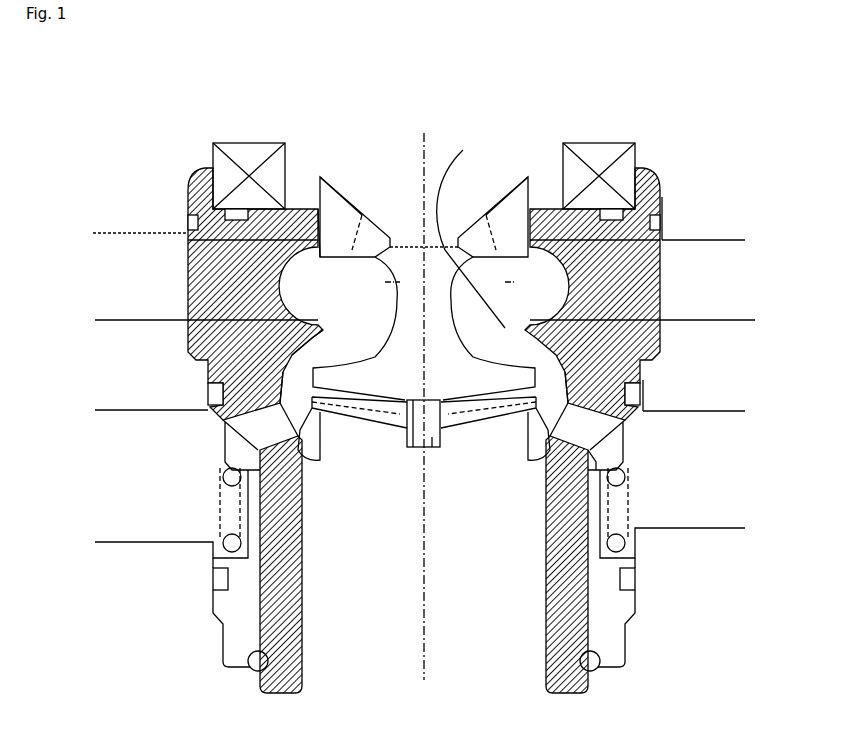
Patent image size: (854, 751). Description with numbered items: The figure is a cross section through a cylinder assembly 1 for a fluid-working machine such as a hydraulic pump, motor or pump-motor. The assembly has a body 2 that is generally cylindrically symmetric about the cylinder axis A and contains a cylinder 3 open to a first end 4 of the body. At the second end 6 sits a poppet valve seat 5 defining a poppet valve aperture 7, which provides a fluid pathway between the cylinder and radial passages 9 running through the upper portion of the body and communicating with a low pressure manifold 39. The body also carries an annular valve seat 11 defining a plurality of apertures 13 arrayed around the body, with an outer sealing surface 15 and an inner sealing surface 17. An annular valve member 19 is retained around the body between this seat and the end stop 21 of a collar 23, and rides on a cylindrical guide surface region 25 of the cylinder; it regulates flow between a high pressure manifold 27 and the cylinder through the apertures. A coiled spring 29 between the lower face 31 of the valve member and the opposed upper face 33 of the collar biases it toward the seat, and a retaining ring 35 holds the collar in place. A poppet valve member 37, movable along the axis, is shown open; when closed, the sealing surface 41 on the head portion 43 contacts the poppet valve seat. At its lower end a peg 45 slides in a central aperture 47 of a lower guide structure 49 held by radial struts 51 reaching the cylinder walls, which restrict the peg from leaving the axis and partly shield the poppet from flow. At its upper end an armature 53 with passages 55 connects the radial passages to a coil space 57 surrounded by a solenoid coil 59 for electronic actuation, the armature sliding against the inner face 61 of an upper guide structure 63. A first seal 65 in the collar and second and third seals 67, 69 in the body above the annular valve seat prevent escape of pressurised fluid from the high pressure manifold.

The cylinder assembly 1 is at (219, 83).
The body 2 is at (586, 689).
The cylinder 3 is at (190, 193).
The first end 4 is at (670, 707).
The poppet valve seat 5 is at (424, 387).
The second end 6 is at (659, 167).
The poppet valve aperture 7 is at (471, 233).
The radial passages 9 is at (183, 272).
The annular valve seat 11 is at (615, 445).
The apertures 13 is at (312, 458).
The outer sealing surface 15 is at (208, 408).
The inner sealing surface 17 is at (302, 495).
The annular valve member 19 is at (628, 440).
The end stop 21 is at (633, 527).
The collar 23 is at (233, 626).
The cylindrical guide surface region 25 is at (258, 470).
The high pressure manifold 27 is at (432, 433).
The coiled spring 29 is at (190, 542).
The lower face 31 is at (626, 480).
The upper face 33 is at (636, 568).
The retaining ring 35 is at (252, 668).
The poppet valve member 37 is at (394, 298).
The low pressure manifold 39 is at (421, 276).
The sealing surface 41 is at (317, 364).
The head portion 43 is at (424, 328).
The peg 45 is at (434, 448).
The central aperture 47 is at (408, 428).
The lower guide structure 49 is at (347, 414).
The radial struts 51 is at (443, 405).
The armature 53 is at (336, 193).
The passages 55 is at (364, 214).
The coil space 57 is at (536, 189).
The solenoid coil 59 is at (222, 143).
The inner face 61 is at (522, 229).
The upper guide structure 63 is at (306, 209).
The first seal 65 is at (212, 578).
The second seal 67 is at (644, 396).
The third seal 69 is at (660, 226).
The cylinder axis A is at (422, 399).